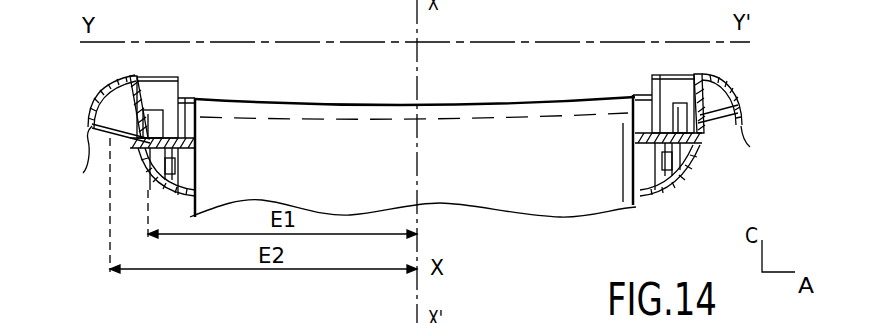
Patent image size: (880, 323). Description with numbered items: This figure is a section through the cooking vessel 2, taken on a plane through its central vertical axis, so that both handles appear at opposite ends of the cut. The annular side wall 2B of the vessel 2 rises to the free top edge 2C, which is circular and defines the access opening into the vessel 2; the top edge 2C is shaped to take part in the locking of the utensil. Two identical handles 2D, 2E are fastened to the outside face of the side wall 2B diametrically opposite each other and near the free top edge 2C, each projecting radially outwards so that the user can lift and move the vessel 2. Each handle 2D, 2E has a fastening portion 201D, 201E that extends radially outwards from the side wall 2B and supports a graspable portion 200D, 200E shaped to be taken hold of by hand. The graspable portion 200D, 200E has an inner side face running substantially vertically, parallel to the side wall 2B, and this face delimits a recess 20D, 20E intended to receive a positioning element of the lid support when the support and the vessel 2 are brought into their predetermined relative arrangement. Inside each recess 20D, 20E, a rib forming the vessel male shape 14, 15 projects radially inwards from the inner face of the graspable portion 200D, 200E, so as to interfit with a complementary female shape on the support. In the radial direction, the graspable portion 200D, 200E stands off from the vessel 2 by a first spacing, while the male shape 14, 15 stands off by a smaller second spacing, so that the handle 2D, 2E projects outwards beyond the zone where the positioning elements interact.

The vessel 2 is at (645, 205).
The annular side wall 2B is at (593, 187).
The free top edge 2C is at (198, 100).
The handle 2D is at (88, 102).
The handle 2E is at (742, 90).
The vessel male shape 14 is at (700, 135).
The vessel male shape 15 is at (134, 133).
The recess 20D is at (165, 118).
The recess 20E is at (670, 92).
The graspable portion 200D is at (58, 154).
The graspable portion 200E is at (771, 143).
The fastening portion 201D is at (193, 178).
The fastening portion 201E is at (670, 176).